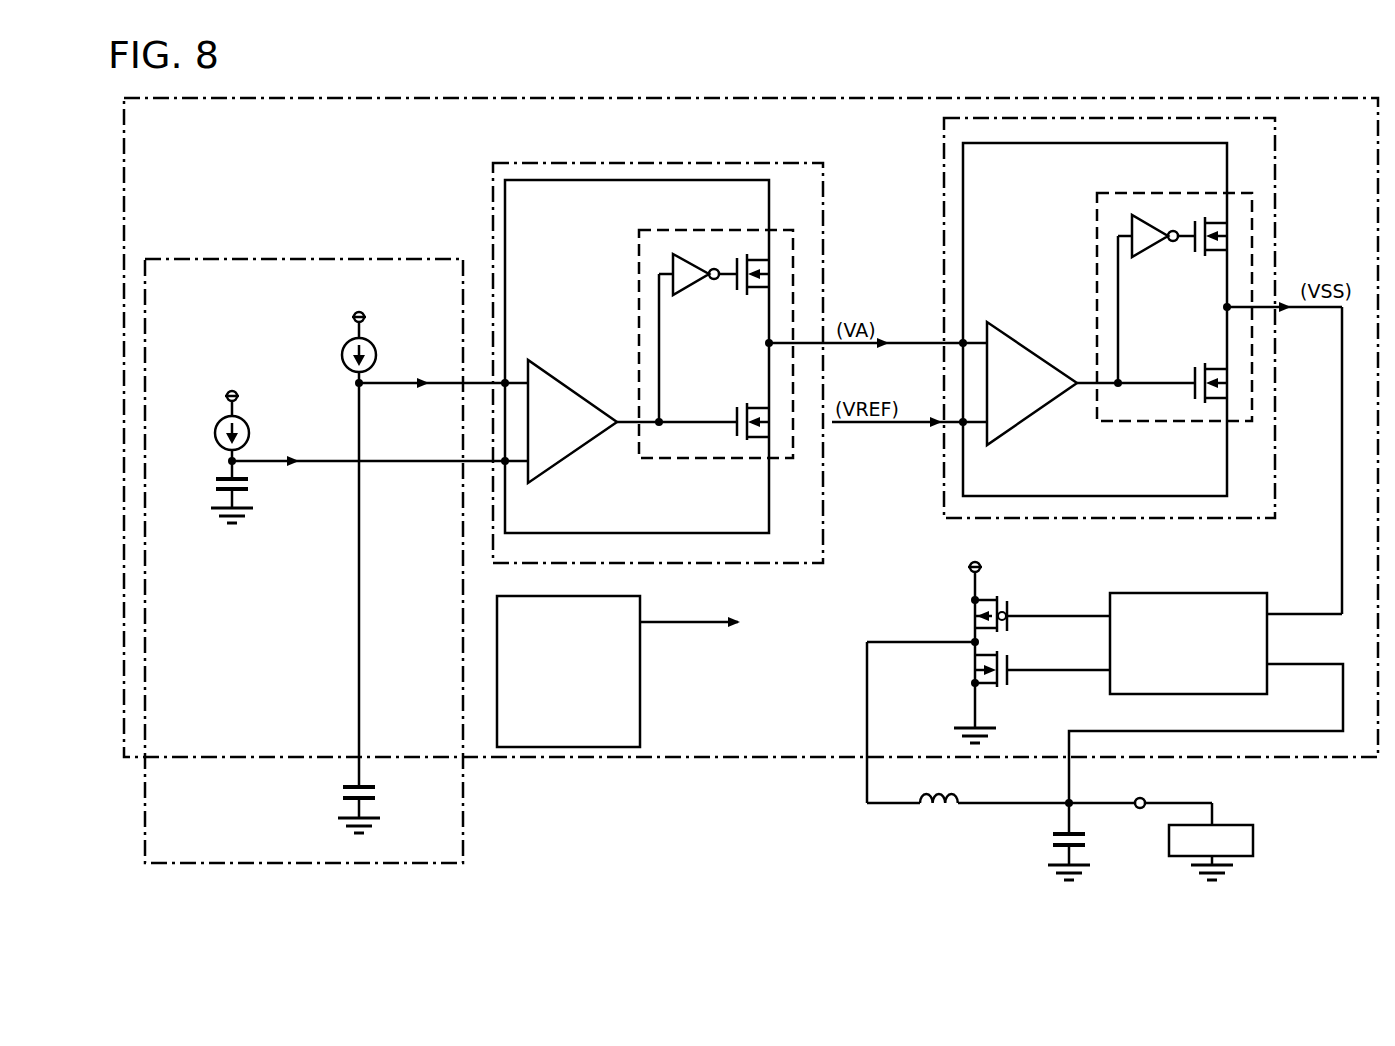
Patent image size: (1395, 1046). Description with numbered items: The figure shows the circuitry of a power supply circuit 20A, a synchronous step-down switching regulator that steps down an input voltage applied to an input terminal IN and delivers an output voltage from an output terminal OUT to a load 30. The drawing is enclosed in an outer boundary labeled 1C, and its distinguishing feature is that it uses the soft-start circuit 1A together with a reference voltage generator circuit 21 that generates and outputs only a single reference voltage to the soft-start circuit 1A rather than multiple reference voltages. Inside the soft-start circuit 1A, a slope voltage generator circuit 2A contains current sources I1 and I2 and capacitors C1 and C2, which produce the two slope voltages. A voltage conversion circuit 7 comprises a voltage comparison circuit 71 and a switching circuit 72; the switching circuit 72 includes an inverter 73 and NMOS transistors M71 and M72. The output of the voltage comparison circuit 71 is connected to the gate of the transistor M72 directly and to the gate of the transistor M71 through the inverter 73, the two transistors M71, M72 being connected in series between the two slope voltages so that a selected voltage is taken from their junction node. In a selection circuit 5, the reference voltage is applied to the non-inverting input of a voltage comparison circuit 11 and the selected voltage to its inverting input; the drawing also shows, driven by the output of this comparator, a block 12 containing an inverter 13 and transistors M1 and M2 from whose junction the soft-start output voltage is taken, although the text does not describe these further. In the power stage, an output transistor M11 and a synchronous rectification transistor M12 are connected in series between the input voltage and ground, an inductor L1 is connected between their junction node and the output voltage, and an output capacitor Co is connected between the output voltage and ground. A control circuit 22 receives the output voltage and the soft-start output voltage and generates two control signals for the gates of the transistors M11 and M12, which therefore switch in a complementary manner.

The soft-start circuit 1A is at (237, 198).
The semiconductor device 1C is at (722, 95).
The slope voltage generator circuit 2A is at (317, 254).
The power supply circuit 20A is at (1083, 76).
The selection circuit 5 is at (1284, 149).
The voltage conversion circuit 7 is at (833, 197).
The voltage comparison circuit 71 is at (558, 366).
The switching circuit 72 is at (684, 466).
The inverter 73 is at (691, 298).
The NMOS transistor M71 is at (747, 285).
The NMOS transistor M72 is at (747, 409).
The voltage comparison circuit 11 is at (1017, 335).
The output circuit 12 is at (1167, 428).
The inverter 13 is at (1150, 259).
The PMOS transistor M1 is at (1206, 248).
The NMOS transistor M2 is at (1206, 372).
The reference voltage generator circuit 21 is at (641, 724).
The control circuit 22 is at (1256, 582).
The input terminal IN is at (968, 572).
The output transistor M11 is at (1018, 618).
The synchronous rectification transistor M12 is at (1018, 663).
The inductor L1 is at (1030, 782).
The output capacitor Co is at (1077, 829).
The output terminal OUT is at (1137, 810).
The load 30 is at (1229, 824).
The capacitor C1 is at (371, 809).
The capacitor C2 is at (244, 499).
The current source I1 is at (341, 354).
The current source I2 is at (215, 429).